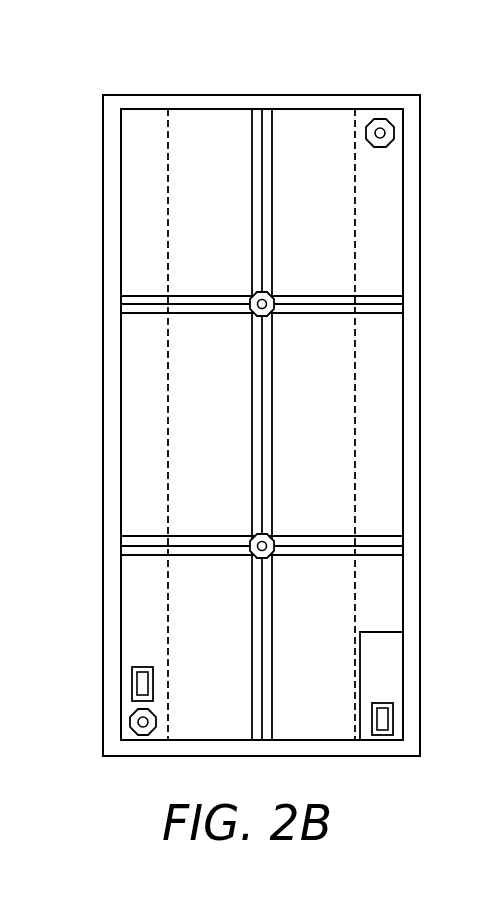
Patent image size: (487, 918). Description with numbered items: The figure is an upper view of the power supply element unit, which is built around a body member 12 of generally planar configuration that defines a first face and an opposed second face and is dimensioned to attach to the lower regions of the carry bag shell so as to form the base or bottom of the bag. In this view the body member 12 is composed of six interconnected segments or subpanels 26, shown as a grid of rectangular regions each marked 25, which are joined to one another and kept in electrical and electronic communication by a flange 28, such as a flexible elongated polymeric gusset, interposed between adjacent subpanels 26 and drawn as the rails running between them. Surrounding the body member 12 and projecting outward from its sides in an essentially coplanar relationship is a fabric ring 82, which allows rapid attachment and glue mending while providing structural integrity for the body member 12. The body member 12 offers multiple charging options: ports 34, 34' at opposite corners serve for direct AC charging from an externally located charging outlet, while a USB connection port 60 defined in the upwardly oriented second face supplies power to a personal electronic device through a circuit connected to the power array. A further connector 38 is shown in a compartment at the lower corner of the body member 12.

The body member 12 is at (376, 90).
The fabric ring 82 is at (191, 95).
The subpanels 26 is at (385, 230).
The flange 28 is at (385, 300).
The photovoltaic panel 25 is at (218, 208).
The port 34 is at (415, 133).
The port 34' is at (103, 722).
The USB connection port 60 is at (132, 683).
The junction connector 38 is at (383, 716).